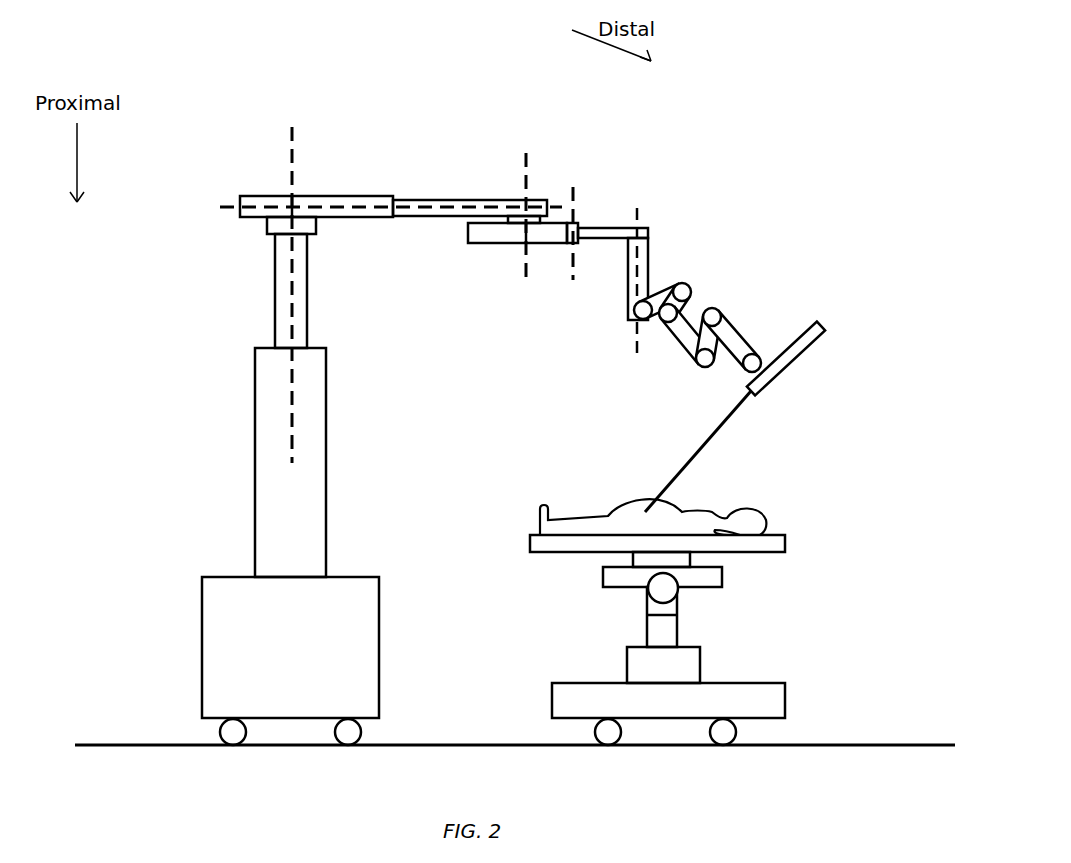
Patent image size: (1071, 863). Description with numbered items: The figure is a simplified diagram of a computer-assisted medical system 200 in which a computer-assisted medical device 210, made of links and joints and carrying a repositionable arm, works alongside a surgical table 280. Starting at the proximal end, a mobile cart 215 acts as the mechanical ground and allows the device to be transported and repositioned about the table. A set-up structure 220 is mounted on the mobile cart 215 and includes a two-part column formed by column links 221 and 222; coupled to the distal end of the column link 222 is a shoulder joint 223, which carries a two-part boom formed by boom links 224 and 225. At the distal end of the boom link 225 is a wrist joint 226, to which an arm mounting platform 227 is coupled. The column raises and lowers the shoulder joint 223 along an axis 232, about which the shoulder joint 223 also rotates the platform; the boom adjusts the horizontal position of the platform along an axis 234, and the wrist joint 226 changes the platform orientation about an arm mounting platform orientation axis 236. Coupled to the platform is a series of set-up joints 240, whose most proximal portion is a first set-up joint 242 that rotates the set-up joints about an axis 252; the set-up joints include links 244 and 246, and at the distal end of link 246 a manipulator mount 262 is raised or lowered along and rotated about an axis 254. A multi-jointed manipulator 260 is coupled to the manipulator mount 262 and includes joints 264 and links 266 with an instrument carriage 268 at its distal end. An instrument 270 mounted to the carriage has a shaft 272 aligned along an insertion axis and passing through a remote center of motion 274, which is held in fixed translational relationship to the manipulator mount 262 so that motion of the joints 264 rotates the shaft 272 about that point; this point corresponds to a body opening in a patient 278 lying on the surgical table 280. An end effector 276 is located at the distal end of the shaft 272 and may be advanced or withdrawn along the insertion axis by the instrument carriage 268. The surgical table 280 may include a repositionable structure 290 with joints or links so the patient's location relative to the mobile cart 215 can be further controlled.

The computer-assisted medical system 200 is at (240, 55).
The computer-assisted medical device 210 is at (290, 762).
The mobile cart 215 is at (202, 640).
The set-up structure 220 is at (180, 190).
The column link 221 is at (327, 428).
The column link 222 is at (308, 285).
The shoulder joint 223 is at (268, 234).
The boom link 224 is at (335, 196).
The boom link 225 is at (432, 200).
The wrist joint 226 is at (468, 226).
The arm mounting platform 227 is at (495, 244).
The axis 232 is at (292, 126).
The axis 234 is at (225, 205).
The arm mounting platform orientation axis 236 is at (524, 152).
The set-up joints 240 is at (740, 230).
The first set-up joint 242 is at (578, 226).
The link 244 is at (650, 235).
The link 246 is at (655, 263).
The axis 252 is at (572, 222).
The axis 254 is at (635, 330).
The manipulator 260 is at (826, 347).
The manipulator mount 262 is at (640, 322).
The joints 264 is at (683, 292).
The links 266 is at (655, 290).
The instrument carriage 268 is at (800, 362).
The instrument 270 is at (887, 357).
The shaft 272 is at (752, 398).
The remote center of motion 274 is at (645, 490).
The end effector 276 is at (640, 510).
The patient 278 is at (770, 522).
The surgical table 280 is at (667, 762).
The repositionable structure 290 is at (793, 550).